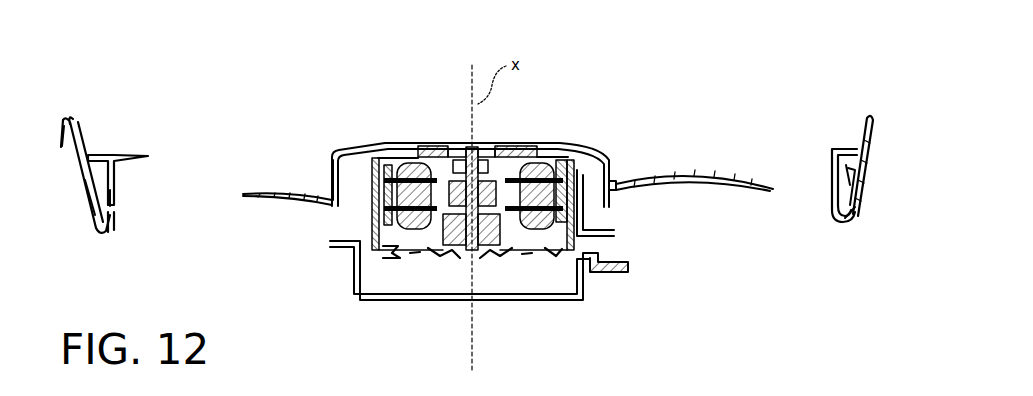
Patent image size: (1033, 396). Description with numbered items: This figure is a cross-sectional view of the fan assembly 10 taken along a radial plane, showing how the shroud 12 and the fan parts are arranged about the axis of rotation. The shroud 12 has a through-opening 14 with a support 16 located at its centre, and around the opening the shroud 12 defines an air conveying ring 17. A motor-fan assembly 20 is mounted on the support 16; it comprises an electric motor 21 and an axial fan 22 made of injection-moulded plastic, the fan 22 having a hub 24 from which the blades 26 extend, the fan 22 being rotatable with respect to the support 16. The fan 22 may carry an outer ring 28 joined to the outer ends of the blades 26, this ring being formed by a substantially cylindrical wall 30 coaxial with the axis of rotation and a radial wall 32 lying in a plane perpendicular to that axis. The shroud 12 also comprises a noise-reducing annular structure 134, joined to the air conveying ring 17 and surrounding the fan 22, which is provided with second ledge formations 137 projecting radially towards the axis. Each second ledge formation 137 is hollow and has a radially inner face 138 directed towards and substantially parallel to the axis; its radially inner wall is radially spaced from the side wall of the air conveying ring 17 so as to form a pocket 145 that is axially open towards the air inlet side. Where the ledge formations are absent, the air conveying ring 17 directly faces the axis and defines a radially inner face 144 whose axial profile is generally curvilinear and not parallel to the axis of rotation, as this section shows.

The hook assembly 10 is at (300, 140).
The shroud 12 is at (76, 118).
The through-opening 14 is at (116, 236).
The support 16 is at (416, 298).
The air conveying ring 17 is at (84, 205).
The motor-fan assembly 20 is at (572, 130).
The electric motor 21 is at (526, 260).
The axial fan 22 is at (340, 148).
The hub 24 is at (424, 143).
The blades 26 is at (275, 186).
The outer ring 28 is at (838, 146).
The cylindrical wall 30 is at (113, 196).
The radial wall 32 is at (103, 150).
The noise-reducing annular structure 134 is at (856, 145).
The second ledge formations 137 is at (858, 212).
The radially inner face 138 is at (848, 178).
The radially inner face 144 is at (84, 193).
The pocket 145 is at (860, 165).